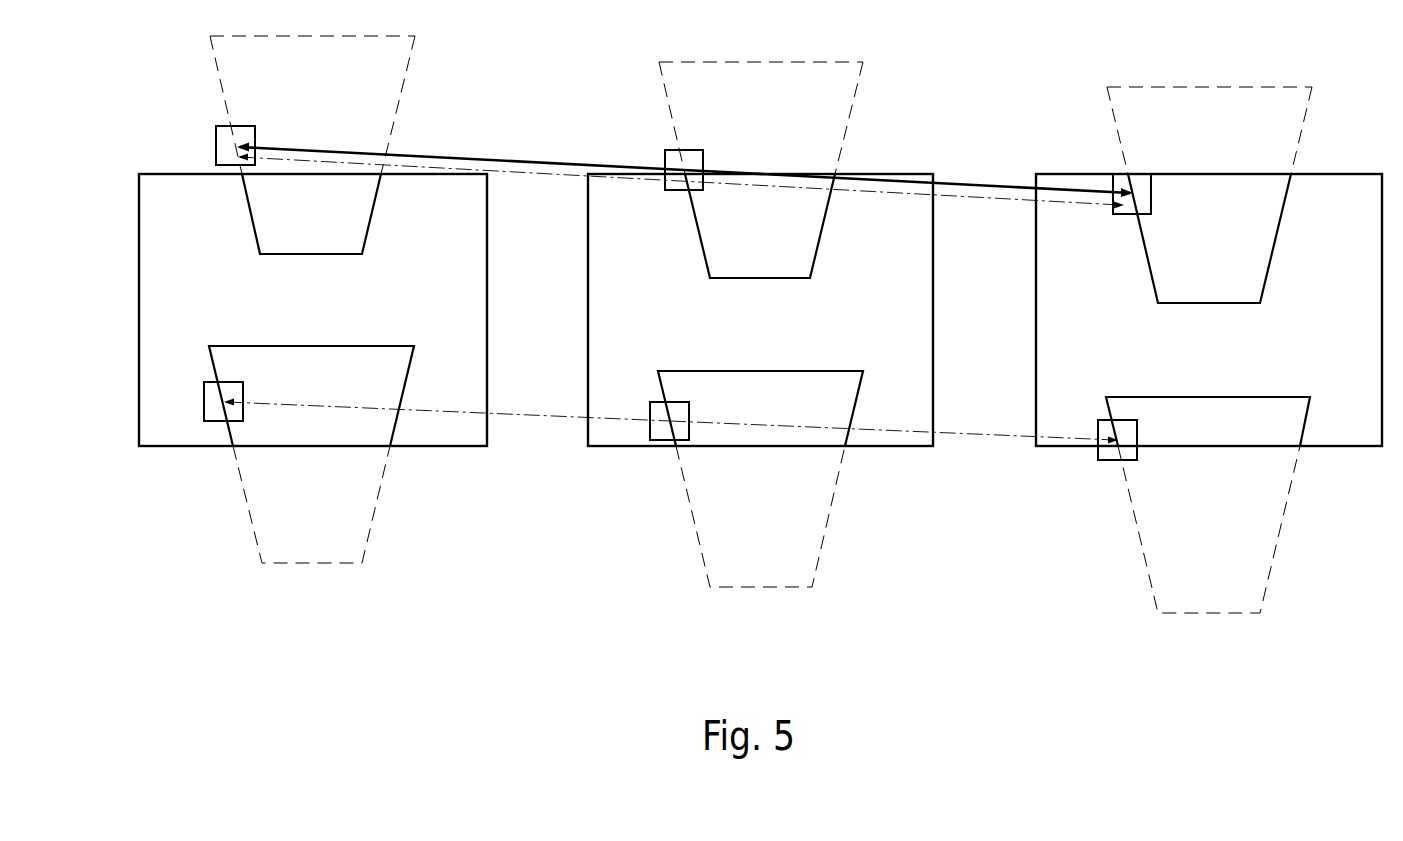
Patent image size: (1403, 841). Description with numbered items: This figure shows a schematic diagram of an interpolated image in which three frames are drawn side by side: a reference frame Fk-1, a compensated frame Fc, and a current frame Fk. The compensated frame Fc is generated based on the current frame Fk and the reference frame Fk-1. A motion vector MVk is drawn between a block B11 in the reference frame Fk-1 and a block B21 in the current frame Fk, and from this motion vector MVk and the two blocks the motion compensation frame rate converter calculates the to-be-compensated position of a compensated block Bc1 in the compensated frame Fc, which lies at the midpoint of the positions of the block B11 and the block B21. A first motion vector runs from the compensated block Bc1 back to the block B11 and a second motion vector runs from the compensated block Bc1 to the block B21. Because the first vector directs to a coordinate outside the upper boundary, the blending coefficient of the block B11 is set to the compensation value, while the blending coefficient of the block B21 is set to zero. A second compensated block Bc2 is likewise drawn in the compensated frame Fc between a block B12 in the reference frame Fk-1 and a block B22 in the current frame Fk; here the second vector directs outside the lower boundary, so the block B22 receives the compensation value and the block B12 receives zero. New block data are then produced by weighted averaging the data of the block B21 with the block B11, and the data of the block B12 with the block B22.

The reference frame Fk-1 is at (139, 277).
The compensated frame Fc is at (588, 250).
The current frame Fk is at (1036, 272).
The first block B11 is at (216, 148).
The first block B12 is at (204, 395).
The compensated block Bc1 is at (665, 159).
The compensated block Bc2 is at (650, 410).
The second block B21 is at (1113, 183).
The second block B22 is at (1098, 428).
The motion vector MVk is at (517, 160).